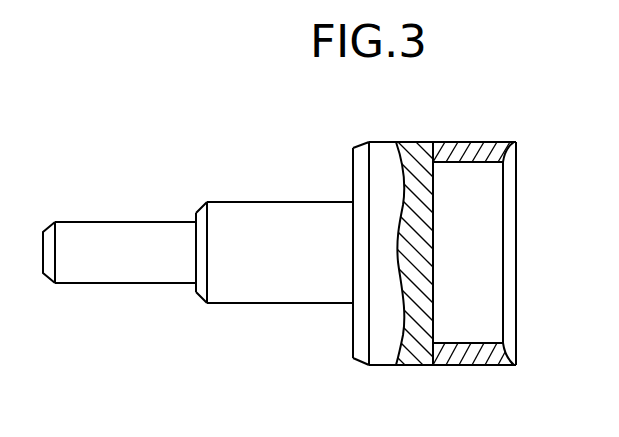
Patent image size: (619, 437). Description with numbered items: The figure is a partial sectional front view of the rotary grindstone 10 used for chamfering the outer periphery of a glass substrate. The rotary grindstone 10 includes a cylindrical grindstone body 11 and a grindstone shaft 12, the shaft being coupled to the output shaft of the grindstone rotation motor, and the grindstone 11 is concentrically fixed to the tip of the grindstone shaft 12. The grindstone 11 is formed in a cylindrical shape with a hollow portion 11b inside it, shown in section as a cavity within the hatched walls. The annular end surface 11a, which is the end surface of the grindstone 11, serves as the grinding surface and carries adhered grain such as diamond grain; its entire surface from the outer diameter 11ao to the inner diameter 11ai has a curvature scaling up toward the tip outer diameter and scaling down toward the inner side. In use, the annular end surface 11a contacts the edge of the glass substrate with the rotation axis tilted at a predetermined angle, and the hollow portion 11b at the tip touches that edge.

The rotary grindstone 10 is at (295, 341).
The grindstone body 11 is at (478, 367).
The annular end surface 11a is at (518, 348).
The outer diameter 11ao is at (516, 142).
The inner diameter 11ai is at (503, 165).
The hollow portion 11b is at (488, 200).
The grindstone shaft 12 is at (95, 285).